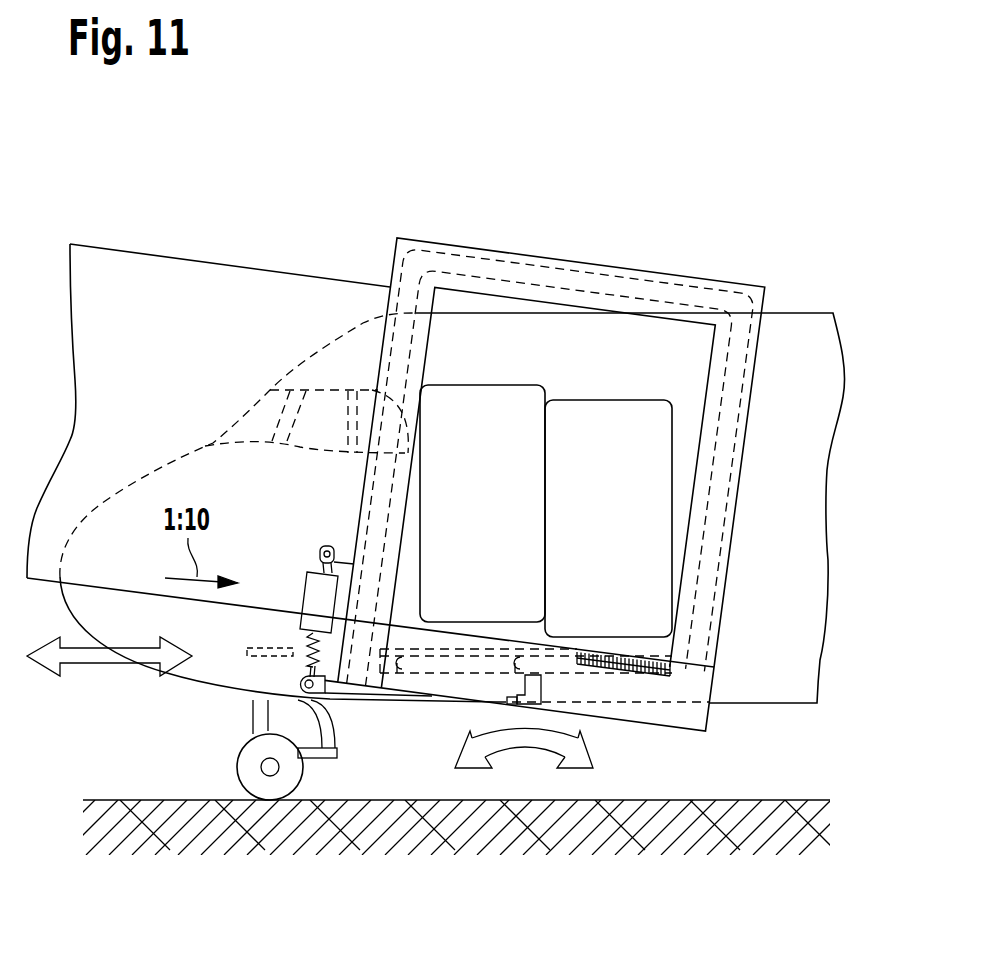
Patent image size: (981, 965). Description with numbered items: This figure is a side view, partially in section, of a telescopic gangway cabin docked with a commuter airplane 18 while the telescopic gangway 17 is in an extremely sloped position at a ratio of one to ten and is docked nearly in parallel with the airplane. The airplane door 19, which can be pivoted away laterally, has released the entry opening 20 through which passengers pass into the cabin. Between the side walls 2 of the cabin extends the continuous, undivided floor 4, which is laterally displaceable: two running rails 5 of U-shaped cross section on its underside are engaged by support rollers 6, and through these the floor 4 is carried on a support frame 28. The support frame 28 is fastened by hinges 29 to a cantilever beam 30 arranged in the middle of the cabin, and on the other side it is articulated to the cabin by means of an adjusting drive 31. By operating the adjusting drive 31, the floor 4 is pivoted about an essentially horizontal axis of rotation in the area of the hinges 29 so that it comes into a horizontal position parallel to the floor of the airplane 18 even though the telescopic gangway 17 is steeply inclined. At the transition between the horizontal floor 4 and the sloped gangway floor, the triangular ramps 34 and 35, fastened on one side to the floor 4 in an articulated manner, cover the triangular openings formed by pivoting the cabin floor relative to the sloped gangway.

The side walls 2 is at (727, 435).
The floor 4 is at (260, 654).
The running rails 5 is at (582, 662).
The support rollers 6 is at (397, 673).
The telescopic gangway 17 is at (217, 298).
The commuter airplane 18 is at (798, 367).
The door 19 is at (620, 440).
The entry opening 20 is at (495, 420).
The support frame 28 is at (332, 684).
The hinges 29 is at (515, 669).
The cantilever beam 30 is at (538, 686).
The adjusting drive 31 is at (316, 596).
The triangular ramp 34 is at (640, 658).
The triangular ramp 35 is at (379, 660).